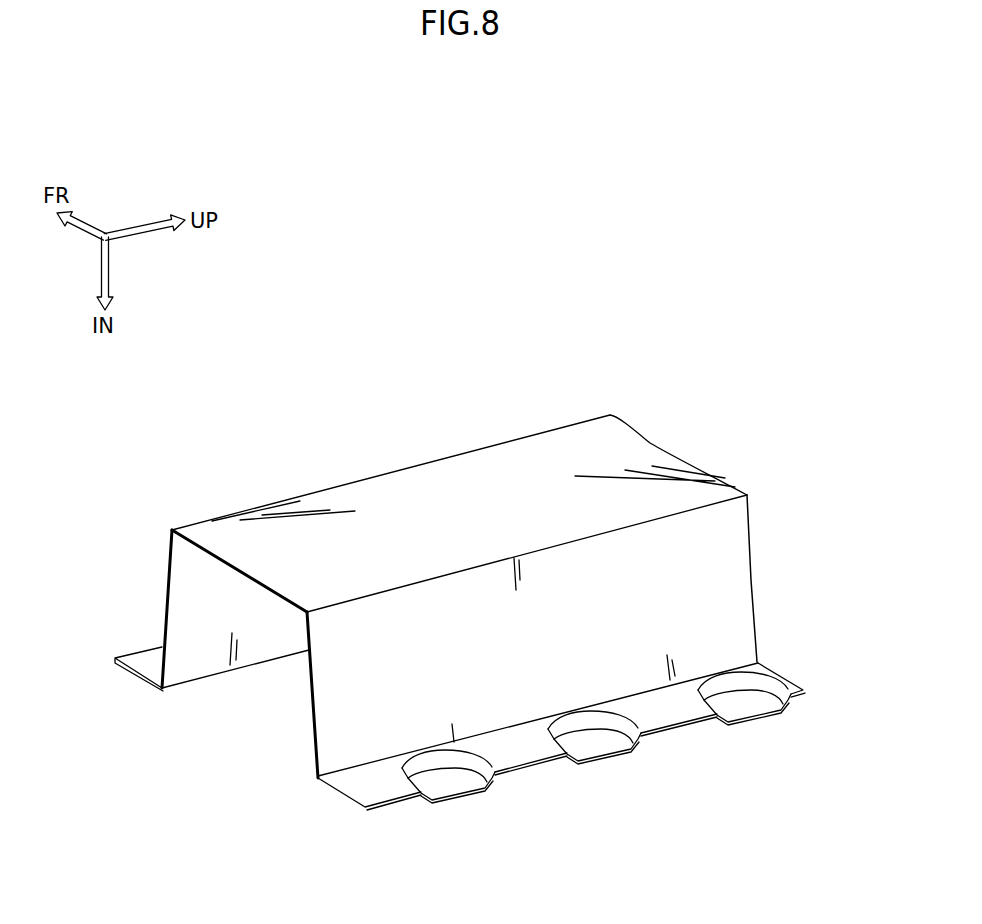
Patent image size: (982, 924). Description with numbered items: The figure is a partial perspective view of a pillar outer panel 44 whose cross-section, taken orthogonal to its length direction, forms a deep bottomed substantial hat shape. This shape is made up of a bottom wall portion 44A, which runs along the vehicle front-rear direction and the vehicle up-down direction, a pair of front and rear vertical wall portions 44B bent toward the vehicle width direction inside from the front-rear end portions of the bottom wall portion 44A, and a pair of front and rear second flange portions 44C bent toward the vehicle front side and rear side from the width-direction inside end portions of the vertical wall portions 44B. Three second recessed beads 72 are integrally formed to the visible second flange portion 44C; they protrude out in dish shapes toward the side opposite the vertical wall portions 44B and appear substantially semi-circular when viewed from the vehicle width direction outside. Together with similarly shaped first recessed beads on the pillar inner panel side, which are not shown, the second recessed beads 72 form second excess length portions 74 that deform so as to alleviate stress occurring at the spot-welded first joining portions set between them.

The pillar outer panel 44 is at (702, 375).
The bottom wall portion 44A is at (367, 497).
The vertical wall portion 44B is at (167, 592).
The second flange portion 44C is at (124, 669).
The second recessed bead 72 is at (610, 771).
The second excess length portion 74 is at (448, 784).